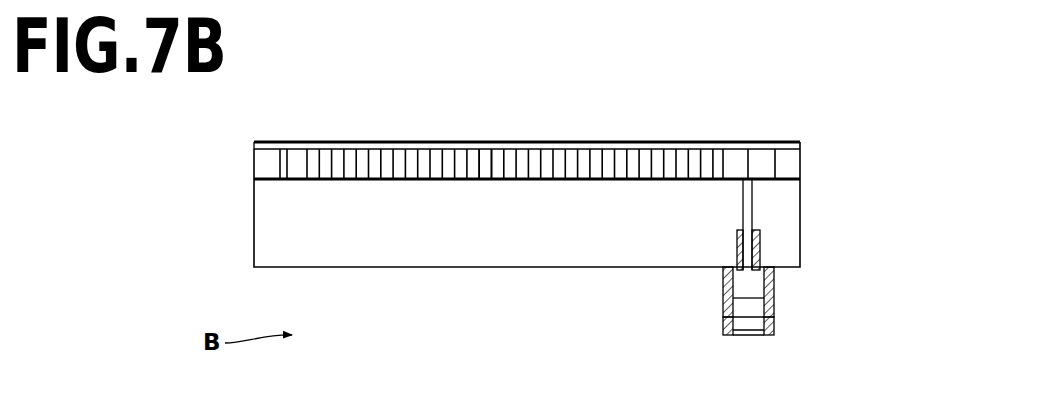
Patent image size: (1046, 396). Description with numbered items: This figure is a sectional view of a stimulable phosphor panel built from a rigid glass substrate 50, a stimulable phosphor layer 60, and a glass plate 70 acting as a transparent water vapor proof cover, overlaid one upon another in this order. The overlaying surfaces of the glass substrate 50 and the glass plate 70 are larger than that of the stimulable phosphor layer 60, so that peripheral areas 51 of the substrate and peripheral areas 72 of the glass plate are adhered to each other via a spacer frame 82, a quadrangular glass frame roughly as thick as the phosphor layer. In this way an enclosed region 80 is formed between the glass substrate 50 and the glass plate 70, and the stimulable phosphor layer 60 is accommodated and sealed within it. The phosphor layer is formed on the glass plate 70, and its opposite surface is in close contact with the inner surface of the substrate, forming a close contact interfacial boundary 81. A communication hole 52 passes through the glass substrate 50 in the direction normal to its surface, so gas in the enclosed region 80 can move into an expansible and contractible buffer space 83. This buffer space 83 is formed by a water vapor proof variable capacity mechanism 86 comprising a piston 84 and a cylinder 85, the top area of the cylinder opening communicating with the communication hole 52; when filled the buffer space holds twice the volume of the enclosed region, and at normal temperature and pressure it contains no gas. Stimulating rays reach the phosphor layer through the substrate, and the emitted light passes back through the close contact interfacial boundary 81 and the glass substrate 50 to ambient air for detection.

The glass substrate 50 is at (787, 212).
The peripheral area 51 is at (284, 173).
The communication hole 52 is at (749, 172).
The stimulable phosphor layer 60 is at (660, 152).
The glass plate 70 is at (594, 142).
The peripheral area 72 is at (276, 152).
The enclosed region 80 is at (741, 165).
The close contact interfacial boundary 81 is at (484, 172).
The spacer frame 82 is at (263, 170).
The buffer space 83 is at (753, 286).
The piston 84 is at (752, 310).
The cylinder 85 is at (775, 322).
The variable capacity mechanism 86 is at (815, 301).